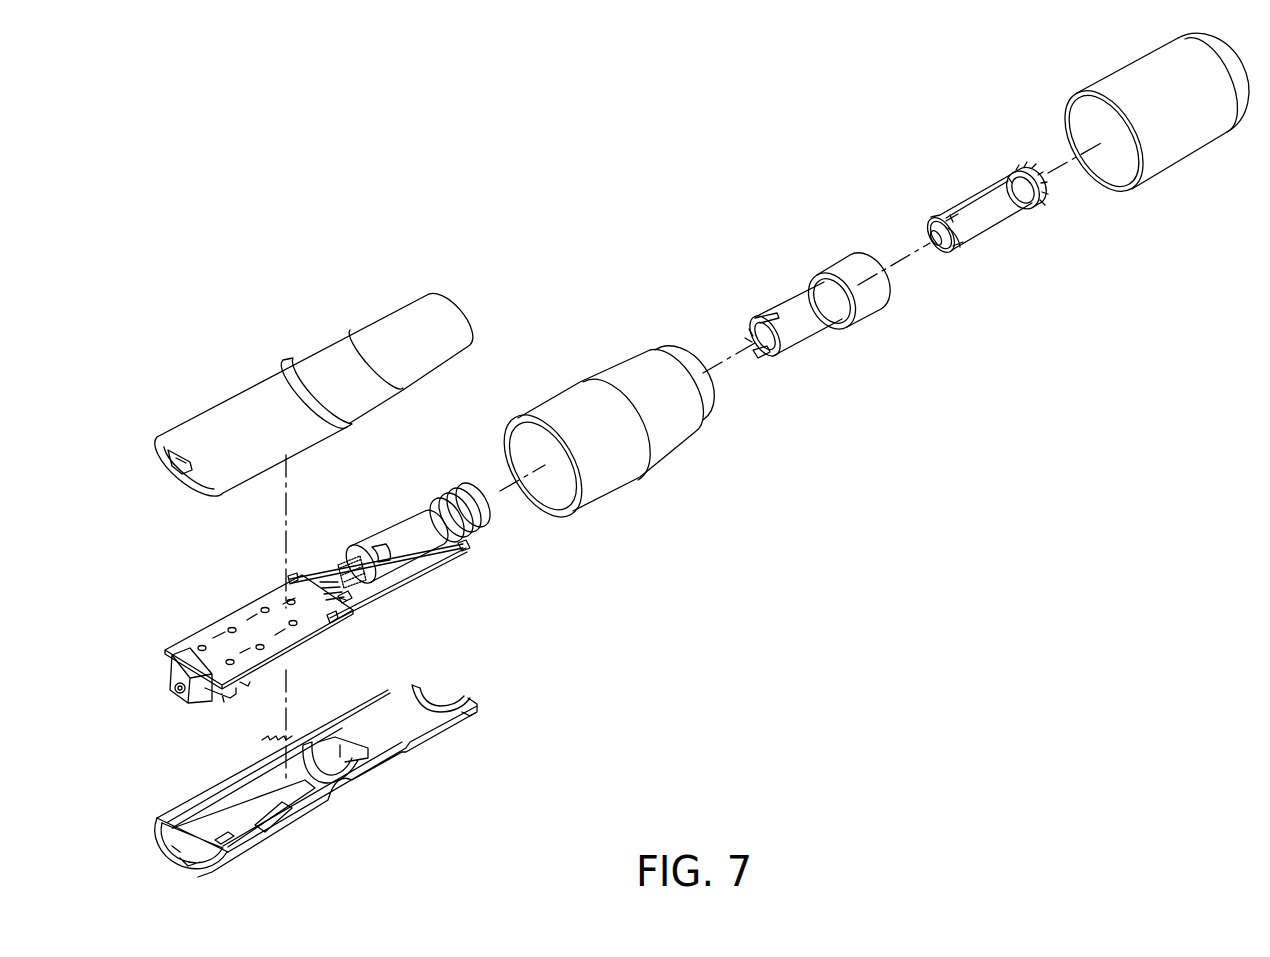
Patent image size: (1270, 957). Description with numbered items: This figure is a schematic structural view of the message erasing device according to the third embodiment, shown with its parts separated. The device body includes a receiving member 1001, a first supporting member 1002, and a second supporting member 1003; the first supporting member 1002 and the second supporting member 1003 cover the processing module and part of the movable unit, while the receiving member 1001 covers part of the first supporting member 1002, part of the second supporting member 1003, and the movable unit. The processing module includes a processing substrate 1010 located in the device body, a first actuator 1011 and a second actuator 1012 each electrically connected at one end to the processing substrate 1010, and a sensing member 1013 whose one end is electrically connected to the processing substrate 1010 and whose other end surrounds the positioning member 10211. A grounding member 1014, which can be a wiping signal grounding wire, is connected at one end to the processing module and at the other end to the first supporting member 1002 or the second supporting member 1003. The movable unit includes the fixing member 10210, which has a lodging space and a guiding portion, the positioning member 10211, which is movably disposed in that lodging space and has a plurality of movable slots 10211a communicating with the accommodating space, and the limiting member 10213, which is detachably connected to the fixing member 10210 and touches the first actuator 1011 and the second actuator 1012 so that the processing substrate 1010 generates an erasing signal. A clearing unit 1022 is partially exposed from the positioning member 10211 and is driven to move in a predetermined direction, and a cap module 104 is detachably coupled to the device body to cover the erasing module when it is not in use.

The receiving member 1001 is at (625, 380).
The first supporting member 1002 is at (248, 405).
The second supporting member 1003 is at (367, 778).
The processing substrate 1010 is at (223, 627).
The first actuator 1011 is at (343, 599).
The second actuator 1012 is at (318, 568).
The sensing member 1013 is at (445, 493).
The grounding member 1014 is at (468, 548).
The fixing member 10210 is at (795, 310).
The positioning member 10211 is at (986, 224).
The movable slot 10211a is at (983, 210).
The limiting member 10213 is at (410, 542).
The clearing unit 1022 is at (1048, 182).
The cap module 104 is at (1182, 130).